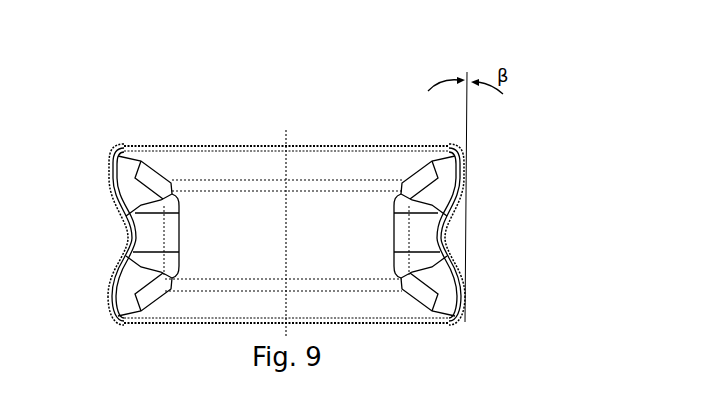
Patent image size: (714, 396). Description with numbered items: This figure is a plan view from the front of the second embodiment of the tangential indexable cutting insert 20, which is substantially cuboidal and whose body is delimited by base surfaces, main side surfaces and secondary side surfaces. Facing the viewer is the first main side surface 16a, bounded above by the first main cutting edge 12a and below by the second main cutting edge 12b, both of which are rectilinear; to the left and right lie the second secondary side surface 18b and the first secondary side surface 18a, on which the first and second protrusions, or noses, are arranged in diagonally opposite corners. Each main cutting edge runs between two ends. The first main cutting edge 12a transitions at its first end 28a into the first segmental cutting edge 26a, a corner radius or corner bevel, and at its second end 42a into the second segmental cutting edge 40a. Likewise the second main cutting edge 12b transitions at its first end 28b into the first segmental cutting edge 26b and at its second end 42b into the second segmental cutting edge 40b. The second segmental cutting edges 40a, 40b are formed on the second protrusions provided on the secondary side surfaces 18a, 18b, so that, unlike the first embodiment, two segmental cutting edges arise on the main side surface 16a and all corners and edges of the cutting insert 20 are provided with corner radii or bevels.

The first main cutting edge 12a is at (238, 146).
The second main cutting edge 12b is at (212, 325).
The first main side surface 16a is at (338, 262).
The first secondary side surface 18a is at (448, 231).
The second secondary side surface 18b is at (126, 240).
The cutting insert 20 is at (543, 128).
The first segmental cutting edge 26a is at (462, 150).
The first segmental cutting edge 26b is at (118, 320).
The first end of the main cutting edge 28a is at (450, 148).
The first end of the main cutting edge 28b is at (119, 326).
The second segmental cutting edge 40a is at (458, 319).
The second segmental cutting edge 40b is at (122, 150).
The second end of the main cutting edge 42a is at (446, 325).
The second end of the main cutting edge 42b is at (126, 152).